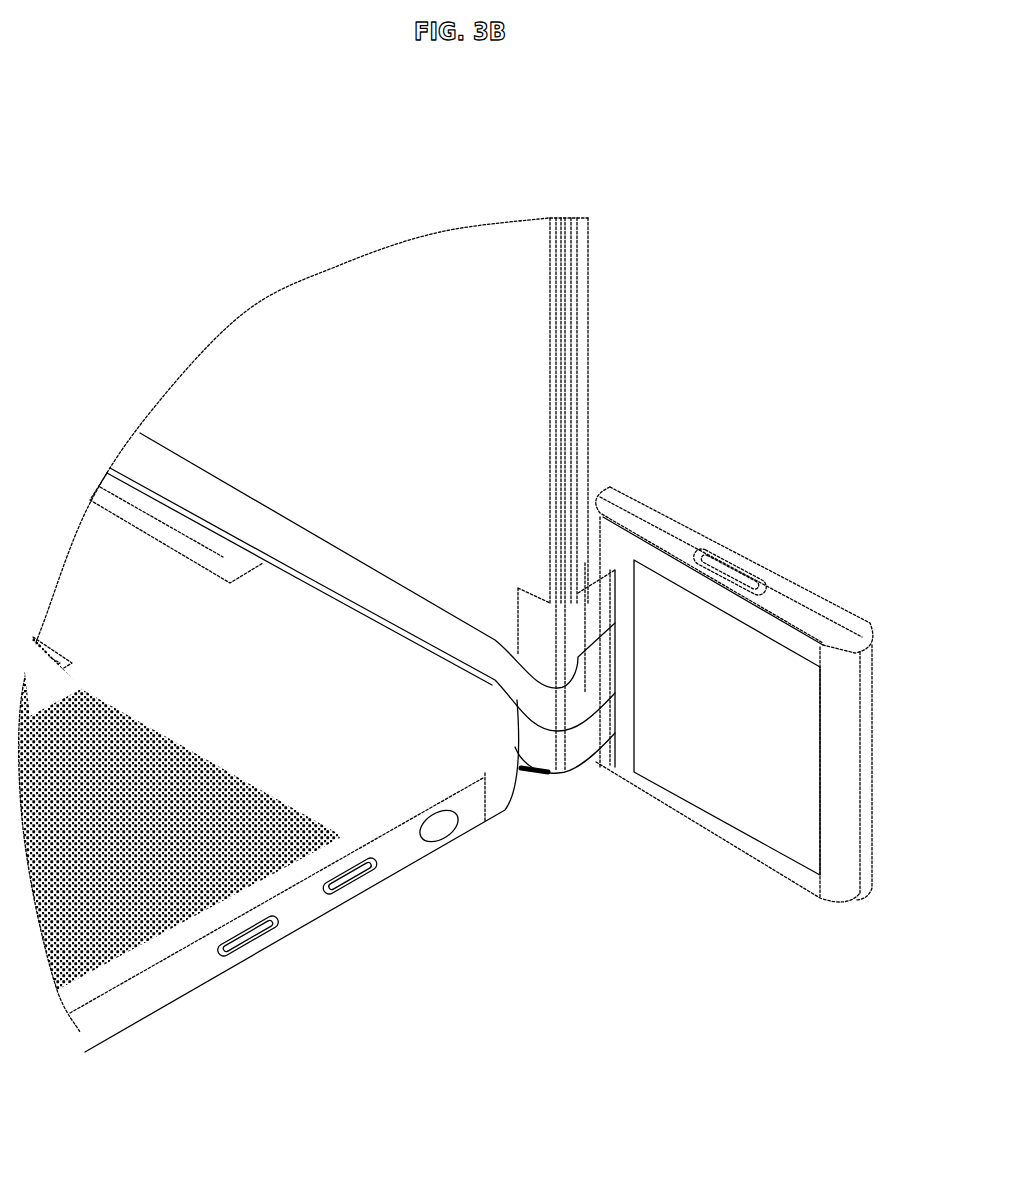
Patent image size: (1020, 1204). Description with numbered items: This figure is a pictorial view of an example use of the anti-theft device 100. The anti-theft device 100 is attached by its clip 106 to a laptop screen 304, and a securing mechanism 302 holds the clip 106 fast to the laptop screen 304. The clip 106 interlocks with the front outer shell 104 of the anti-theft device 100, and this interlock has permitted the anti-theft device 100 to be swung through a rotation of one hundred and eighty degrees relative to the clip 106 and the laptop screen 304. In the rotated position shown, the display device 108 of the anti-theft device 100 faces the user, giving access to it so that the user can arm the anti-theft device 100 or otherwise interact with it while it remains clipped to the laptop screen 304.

The anti-theft device 100 is at (751, 691).
The front outer shell 104 is at (836, 777).
The clip 106 is at (541, 604).
The display device 108 is at (672, 705).
The securing mechanism 302 is at (287, 527).
The laptop screen 304 is at (578, 402).